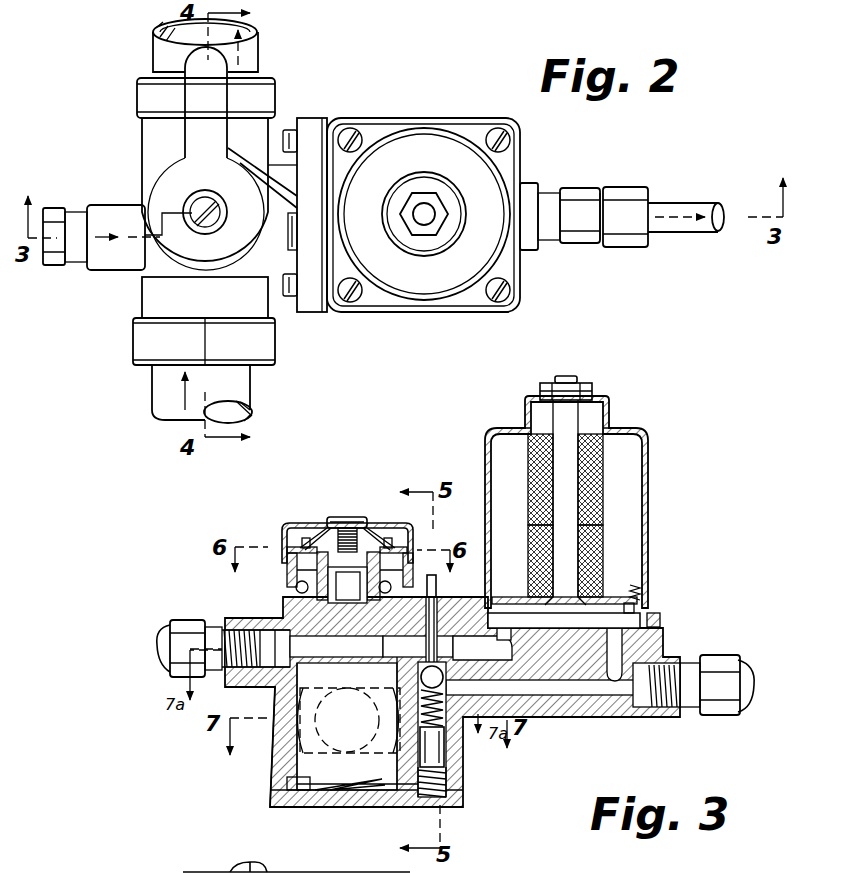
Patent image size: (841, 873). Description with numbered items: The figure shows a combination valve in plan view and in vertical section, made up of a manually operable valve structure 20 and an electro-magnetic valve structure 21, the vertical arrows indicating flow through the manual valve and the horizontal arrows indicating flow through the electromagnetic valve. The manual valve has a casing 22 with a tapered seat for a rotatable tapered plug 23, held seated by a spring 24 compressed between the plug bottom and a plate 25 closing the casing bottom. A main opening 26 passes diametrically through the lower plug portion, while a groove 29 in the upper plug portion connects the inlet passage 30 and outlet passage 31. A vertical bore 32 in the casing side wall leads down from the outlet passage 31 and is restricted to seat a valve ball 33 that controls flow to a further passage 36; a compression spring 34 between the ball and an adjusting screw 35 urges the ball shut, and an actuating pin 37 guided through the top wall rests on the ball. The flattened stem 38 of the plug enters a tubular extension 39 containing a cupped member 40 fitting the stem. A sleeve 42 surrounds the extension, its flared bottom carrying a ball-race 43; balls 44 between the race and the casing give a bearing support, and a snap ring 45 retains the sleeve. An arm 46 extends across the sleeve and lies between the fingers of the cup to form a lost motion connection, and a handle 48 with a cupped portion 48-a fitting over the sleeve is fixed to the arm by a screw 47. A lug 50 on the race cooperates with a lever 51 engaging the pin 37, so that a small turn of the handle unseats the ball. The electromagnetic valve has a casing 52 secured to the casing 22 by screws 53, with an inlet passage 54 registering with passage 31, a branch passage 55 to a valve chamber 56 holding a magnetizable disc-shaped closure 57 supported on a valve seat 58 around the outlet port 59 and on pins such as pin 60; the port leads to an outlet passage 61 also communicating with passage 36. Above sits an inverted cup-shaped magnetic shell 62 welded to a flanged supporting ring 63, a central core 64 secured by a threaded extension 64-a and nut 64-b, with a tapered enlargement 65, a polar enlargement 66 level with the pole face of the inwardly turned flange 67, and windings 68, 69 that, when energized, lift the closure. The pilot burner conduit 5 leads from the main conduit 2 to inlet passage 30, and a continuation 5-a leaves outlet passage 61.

In FIG. 2, the main conduit 2 is at (150, 398).
In FIG. 2, the pilot burner conduit 5 is at (82, 183).
In FIG. 3, the pilot burner conduit 5 is at (157, 645).
In FIG. 2, the continuation of the pilot burner conduit 5-a is at (688, 206).
In FIG. 3, the continuation of the pilot burner conduit 5-a is at (752, 667).
In FIG. 2, the manually operable valve structure 20 is at (137, 166).
In FIG. 3, the manually operable valve structure 20 is at (245, 590).
In FIG. 2, the electro-magnetic valve structure 21 is at (538, 170).
In FIG. 3, the electro-magnetic valve structure 21 is at (662, 600).
In FIG. 2, the casing 22 is at (140, 297).
In FIG. 3, the casing 22 is at (272, 770).
In FIG. 3, the tapered plug 23 is at (310, 779).
In FIG. 3, the spring 24 is at (363, 793).
In FIG. 3, the plate 25 is at (388, 807).
In FIG. 3, the main opening 26 is at (300, 745).
In FIG. 3, the groove 29 is at (370, 658).
In FIG. 3, the inlet passage 30 is at (300, 650).
In FIG. 3, the outlet passage 31 is at (440, 651).
In FIG. 3, the vertical bore 32 is at (445, 748).
In FIG. 3, the valve ball 33 is at (421, 677).
In FIG. 3, the compression spring 34 is at (445, 718).
In FIG. 3, the adjusting screw 35 is at (415, 770).
In FIG. 3, the passage 36 is at (458, 688).
In FIG. 3, the actuating pin 37 is at (427, 627).
In FIG. 3, the flattened stem 38 is at (350, 600).
In FIG. 3, the tubular extension 39 is at (297, 562).
In FIG. 3, the cupped member 40 is at (370, 560).
In FIG. 3, the sleeve 42 is at (415, 510).
In FIG. 3, the ball-race 43 is at (296, 581).
In FIG. 3, the balls 44 is at (297, 600).
In FIG. 3, the snap ring 45 is at (397, 568).
In FIG. 3, the arm 46 is at (330, 522).
In FIG. 2, the screw 47 is at (198, 230).
In FIG. 3, the screw 47 is at (352, 516).
In FIG. 2, the handle 48 is at (196, 98).
In FIG. 3, the cupped portion 48-a is at (284, 531).
In FIG. 2, the lug 50 is at (263, 198).
In FIG. 3, the lug 50 is at (437, 588).
In FIG. 2, the lever 51 is at (290, 243).
In FIG. 2, the casing 52 is at (335, 314).
In FIG. 3, the casing 52 is at (590, 712).
In FIG. 2, the screws 53 is at (290, 300).
In FIG. 3, the inlet passage 54 is at (482, 648).
In FIG. 3, the branch passage 55 is at (502, 634).
In FIG. 3, the valve chamber 56 is at (581, 622).
In FIG. 3, the disc-shaped closure 57 is at (643, 620).
In FIG. 3, the valve seat 58 is at (630, 613).
In FIG. 3, the outlet port 59 is at (616, 675).
In FIG. 3, the pin 60 is at (520, 622).
In FIG. 3, the outlet passage 61 is at (555, 696).
In FIG. 2, the magnetic shell 62 is at (430, 136).
In FIG. 3, the magnetic shell 62 is at (650, 480).
In FIG. 2, the flanged supporting ring 63 is at (466, 130).
In FIG. 3, the flanged supporting ring 63 is at (660, 615).
In FIG. 3, the central core 64 is at (560, 434).
In FIG. 2, the threaded extension 64-a is at (428, 224).
In FIG. 3, the threaded extension 64-a is at (565, 376).
In FIG. 2, the nut 64-b is at (438, 163).
In FIG. 3, the nut 64-b is at (596, 392).
In FIG. 3, the tapered enlargement 65 is at (528, 412).
In FIG. 3, the polar enlargement 66 is at (548, 622).
In FIG. 3, the inwardly turned flange 67 is at (638, 598).
In FIG. 3, the winding 68 is at (602, 492).
In FIG. 3, the winding 69 is at (602, 553).